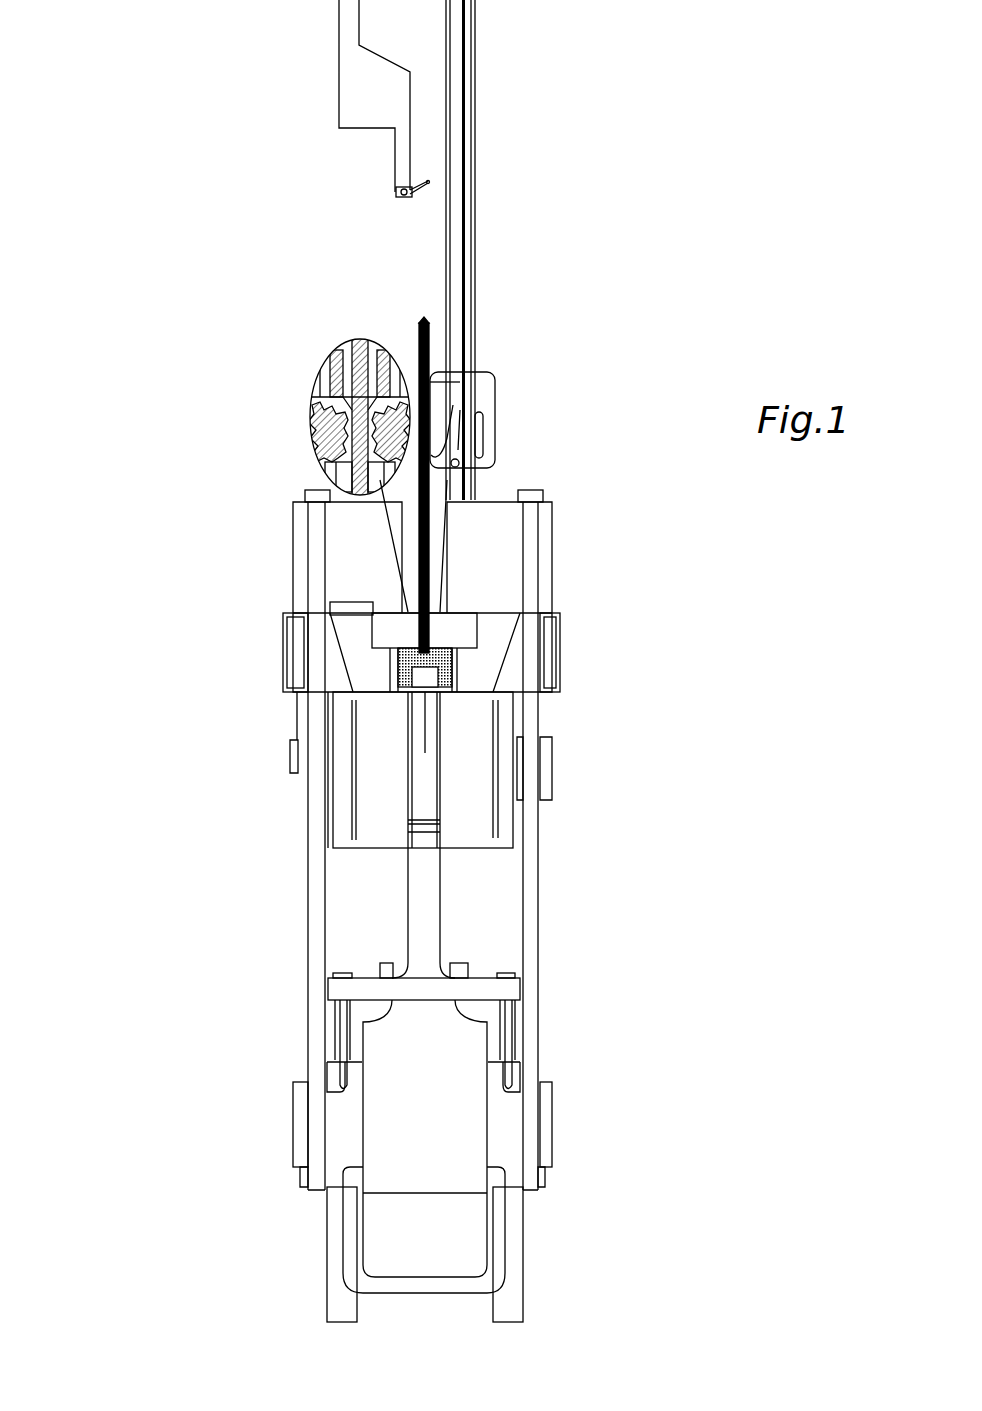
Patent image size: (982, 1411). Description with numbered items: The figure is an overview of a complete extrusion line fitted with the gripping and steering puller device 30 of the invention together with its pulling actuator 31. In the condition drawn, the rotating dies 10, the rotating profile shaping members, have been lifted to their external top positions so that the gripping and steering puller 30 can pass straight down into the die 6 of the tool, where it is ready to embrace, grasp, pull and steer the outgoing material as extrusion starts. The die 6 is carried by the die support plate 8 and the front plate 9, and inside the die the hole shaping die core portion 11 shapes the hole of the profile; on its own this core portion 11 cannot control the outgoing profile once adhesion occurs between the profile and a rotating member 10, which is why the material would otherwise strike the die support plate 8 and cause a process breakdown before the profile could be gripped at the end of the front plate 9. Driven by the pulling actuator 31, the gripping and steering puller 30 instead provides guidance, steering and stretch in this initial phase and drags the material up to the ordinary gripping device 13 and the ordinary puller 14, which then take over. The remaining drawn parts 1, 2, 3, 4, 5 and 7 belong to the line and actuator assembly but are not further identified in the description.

The cradle support 1 is at (352, 1255).
The sample container 2 is at (375, 1093).
The piston rod 3 is at (426, 868).
The piston 4 is at (426, 783).
The cylinder 5 is at (375, 745).
The die 6 is at (395, 688).
The seal 7 is at (453, 680).
The die support plate 8 is at (452, 633).
The front plate 9 is at (352, 535).
The rotating dies 10 is at (333, 484).
The hole shaping die core portion 11 is at (337, 420).
The gripping device 13 is at (400, 197).
The puller 14 is at (339, 128).
The gripping & steering puller 30 is at (427, 319).
The pulling actuator 31 is at (490, 398).